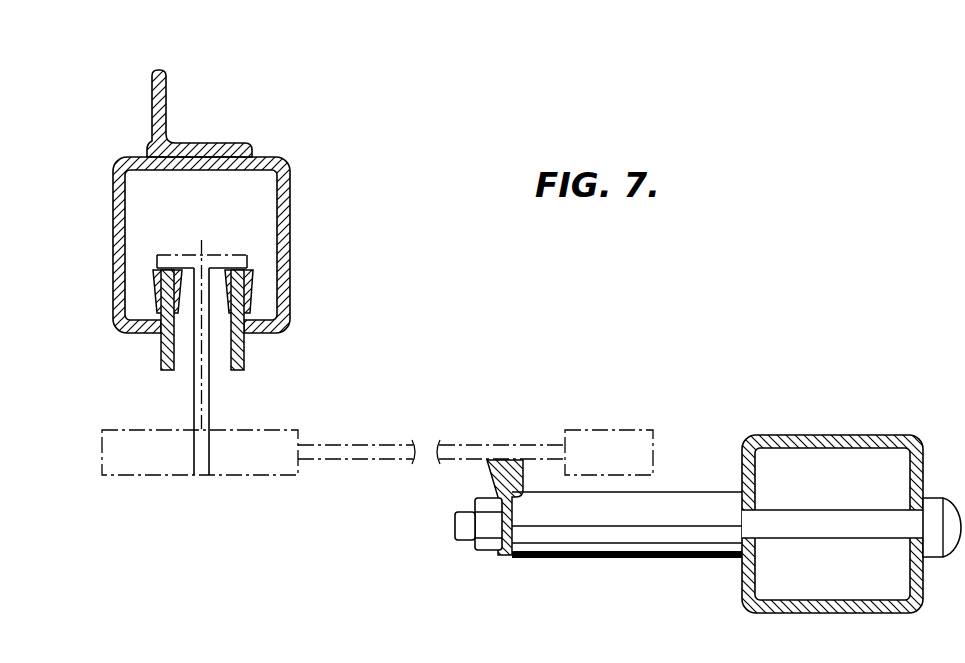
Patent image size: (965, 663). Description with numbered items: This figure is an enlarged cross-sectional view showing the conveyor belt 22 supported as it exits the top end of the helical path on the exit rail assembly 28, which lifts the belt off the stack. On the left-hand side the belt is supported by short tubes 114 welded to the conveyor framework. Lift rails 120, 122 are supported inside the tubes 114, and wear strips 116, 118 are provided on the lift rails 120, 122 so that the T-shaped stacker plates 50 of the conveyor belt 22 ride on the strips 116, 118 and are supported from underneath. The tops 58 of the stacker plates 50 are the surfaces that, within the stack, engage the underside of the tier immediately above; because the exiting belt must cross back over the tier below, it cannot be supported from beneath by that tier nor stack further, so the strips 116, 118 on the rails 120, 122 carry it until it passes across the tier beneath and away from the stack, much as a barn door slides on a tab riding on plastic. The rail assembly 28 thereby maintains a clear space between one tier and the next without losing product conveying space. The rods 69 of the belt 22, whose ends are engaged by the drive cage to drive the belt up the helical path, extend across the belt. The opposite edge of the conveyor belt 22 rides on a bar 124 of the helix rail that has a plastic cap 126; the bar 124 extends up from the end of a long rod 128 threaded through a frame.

The short tubes 114 is at (290, 232).
The wear strip 116 is at (153, 271).
The wear strip 118 is at (250, 271).
The lift rail 120 is at (161, 353).
The lift rail 122 is at (244, 353).
The stacker plate 50 is at (210, 405).
The top of stacker plate 58 is at (206, 262).
The conveyor belt 22 is at (376, 420).
The rod 69 is at (526, 448).
The plastic cap 126 is at (496, 479).
The bar 124 is at (500, 551).
The long rod 128 is at (857, 510).
The rail assembly 28 is at (340, 574).